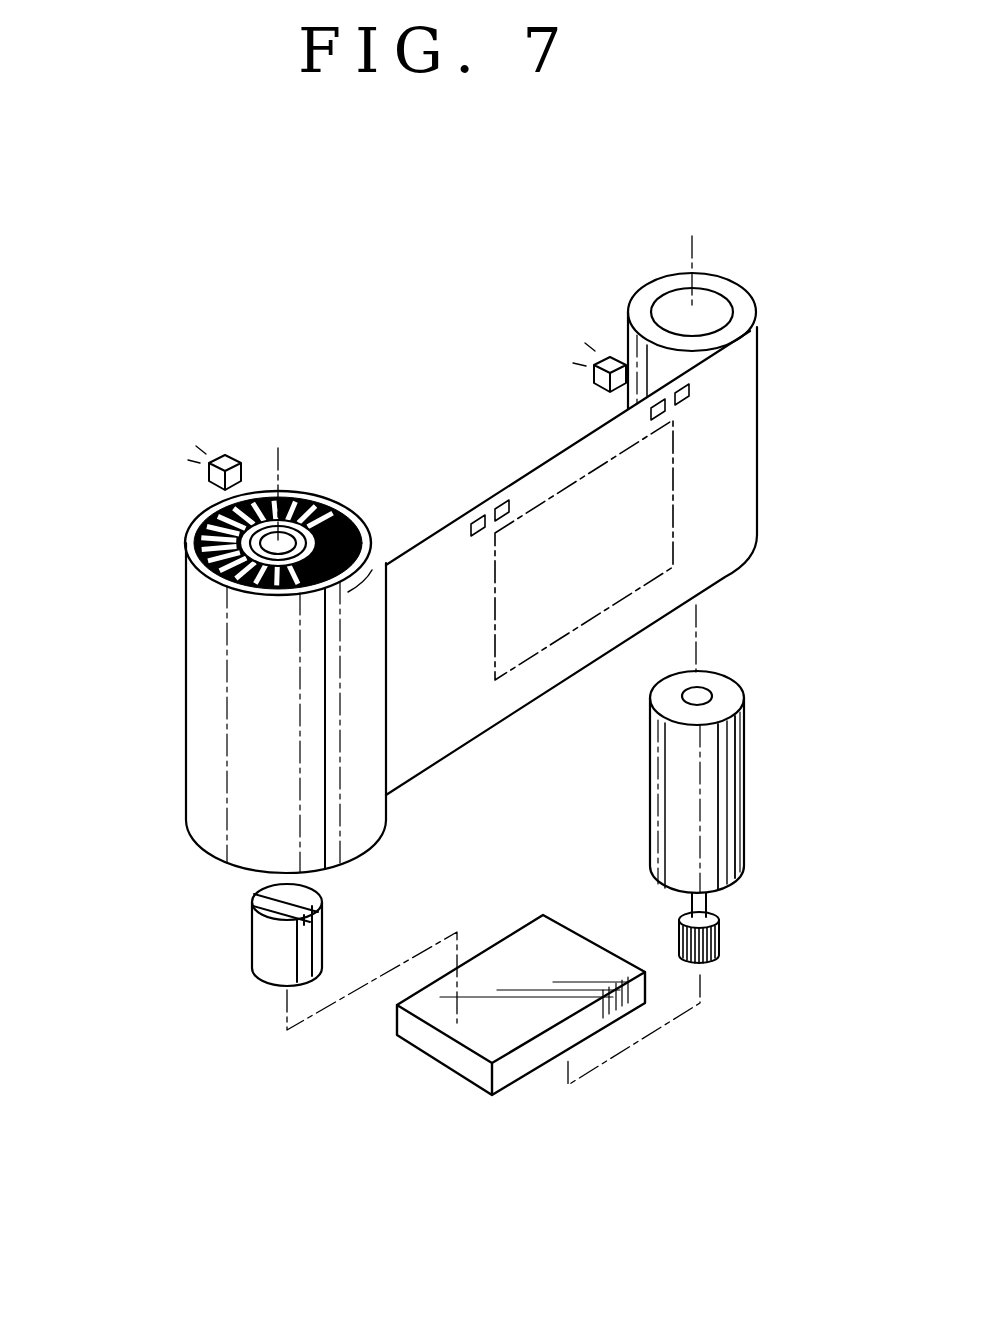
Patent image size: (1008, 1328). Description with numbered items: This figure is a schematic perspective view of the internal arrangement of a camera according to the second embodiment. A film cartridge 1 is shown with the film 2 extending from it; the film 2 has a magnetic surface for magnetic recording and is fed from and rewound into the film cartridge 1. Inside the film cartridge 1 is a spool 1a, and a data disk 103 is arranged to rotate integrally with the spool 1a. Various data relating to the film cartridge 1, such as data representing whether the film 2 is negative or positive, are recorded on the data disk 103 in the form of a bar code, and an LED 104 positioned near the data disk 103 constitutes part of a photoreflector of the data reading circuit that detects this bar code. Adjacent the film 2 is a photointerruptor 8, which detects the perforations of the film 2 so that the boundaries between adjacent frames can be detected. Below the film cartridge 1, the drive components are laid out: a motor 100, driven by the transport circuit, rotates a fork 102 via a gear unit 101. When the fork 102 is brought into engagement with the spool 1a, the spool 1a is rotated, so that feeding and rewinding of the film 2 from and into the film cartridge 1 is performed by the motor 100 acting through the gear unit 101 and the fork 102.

The film cartridge 1 is at (205, 668).
The spool 1a is at (297, 522).
The film 2 is at (545, 488).
The photointerruptor 8 is at (607, 352).
The motor 100 is at (731, 752).
The gear unit 101 is at (518, 1035).
The fork 102 is at (268, 957).
The data disk 103 is at (355, 527).
The LED 104 is at (205, 470).